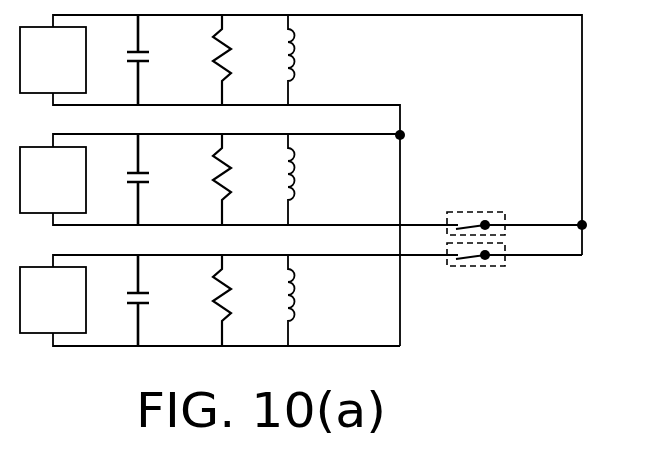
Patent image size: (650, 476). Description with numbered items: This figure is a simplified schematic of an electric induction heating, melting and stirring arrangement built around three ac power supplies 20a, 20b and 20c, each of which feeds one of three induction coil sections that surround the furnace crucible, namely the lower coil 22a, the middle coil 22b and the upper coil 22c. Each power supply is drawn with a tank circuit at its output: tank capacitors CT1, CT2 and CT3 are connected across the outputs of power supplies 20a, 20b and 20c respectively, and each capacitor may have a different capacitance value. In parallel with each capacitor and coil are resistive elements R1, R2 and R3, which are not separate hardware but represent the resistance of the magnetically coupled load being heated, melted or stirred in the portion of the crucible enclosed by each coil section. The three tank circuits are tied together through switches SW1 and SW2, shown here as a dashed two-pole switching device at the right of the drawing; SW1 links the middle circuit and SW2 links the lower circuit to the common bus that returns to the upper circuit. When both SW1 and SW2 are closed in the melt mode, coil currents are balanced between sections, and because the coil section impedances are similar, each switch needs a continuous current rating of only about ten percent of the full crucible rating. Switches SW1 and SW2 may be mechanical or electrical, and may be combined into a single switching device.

The ac power supply 20a is at (80, 306).
The ac power supply 20b is at (80, 186).
The ac power supply 20c is at (80, 66).
The lower coil 22a is at (325, 300).
The middle coil 22b is at (325, 179).
The upper coil 22c is at (324, 60).
The tank capacitor CT1 is at (162, 300).
The tank capacitor CT2 is at (162, 179).
The tank capacitor CT3 is at (162, 60).
The resistive element R1 is at (240, 300).
The resistive element R2 is at (240, 179).
The resistive element R3 is at (240, 60).
The switch SW1 is at (476, 202).
The switch SW2 is at (476, 281).